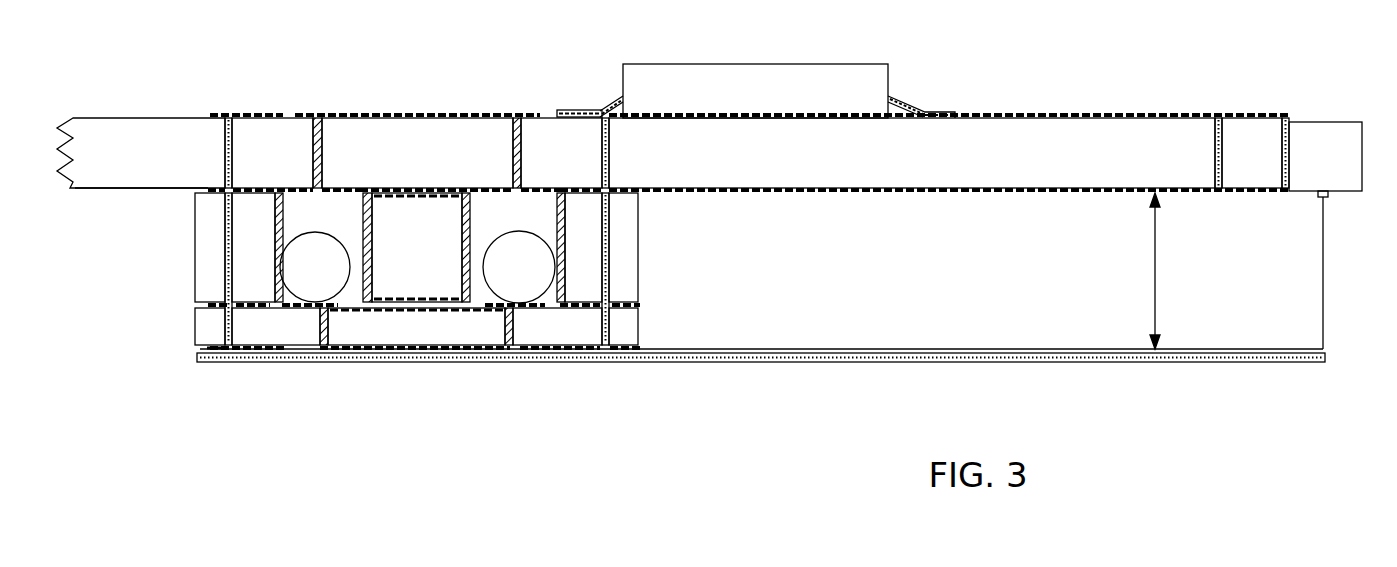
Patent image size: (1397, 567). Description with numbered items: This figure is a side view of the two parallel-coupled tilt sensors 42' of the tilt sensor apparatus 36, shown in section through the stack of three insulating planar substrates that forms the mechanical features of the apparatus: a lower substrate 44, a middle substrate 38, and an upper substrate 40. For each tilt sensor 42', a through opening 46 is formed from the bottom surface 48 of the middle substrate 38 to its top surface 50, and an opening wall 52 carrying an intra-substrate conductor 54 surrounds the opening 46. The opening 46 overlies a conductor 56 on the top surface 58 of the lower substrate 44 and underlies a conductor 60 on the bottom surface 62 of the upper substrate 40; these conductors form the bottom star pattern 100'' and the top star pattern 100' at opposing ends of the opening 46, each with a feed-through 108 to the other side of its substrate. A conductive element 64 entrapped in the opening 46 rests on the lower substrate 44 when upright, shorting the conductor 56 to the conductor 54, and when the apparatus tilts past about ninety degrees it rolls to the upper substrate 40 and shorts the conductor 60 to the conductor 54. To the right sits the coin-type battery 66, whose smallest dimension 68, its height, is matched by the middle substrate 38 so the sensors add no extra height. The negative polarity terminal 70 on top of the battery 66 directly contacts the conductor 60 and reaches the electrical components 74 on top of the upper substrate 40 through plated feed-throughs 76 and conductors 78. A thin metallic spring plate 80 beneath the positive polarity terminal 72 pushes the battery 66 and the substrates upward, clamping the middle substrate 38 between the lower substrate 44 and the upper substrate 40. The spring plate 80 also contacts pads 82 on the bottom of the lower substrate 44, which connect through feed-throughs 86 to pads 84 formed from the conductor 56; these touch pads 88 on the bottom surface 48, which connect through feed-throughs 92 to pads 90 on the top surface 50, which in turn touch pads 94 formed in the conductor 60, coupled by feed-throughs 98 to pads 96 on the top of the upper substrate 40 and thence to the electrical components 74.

The tilt sensor apparatus 36 is at (401, 330).
The middle substrate 38 is at (638, 245).
The upper substrate 40 is at (142, 118).
The tilt sensor 42' is at (398, 366).
The lower substrate 44 is at (197, 345).
The through opening 46 is at (308, 190).
The bottom surface 48 is at (195, 310).
The top surface 50 is at (200, 190).
The opening wall 52 is at (272, 236).
The intra-substrate conductor 54 is at (283, 210).
The conductor 56 is at (595, 308).
The top surface 58 is at (640, 303).
The conductor 60 is at (225, 188).
The bottom surface 62 is at (175, 195).
The conductive element 64 is at (300, 277).
The battery 66 is at (1322, 260).
The smallest dimension 68 is at (1152, 265).
The negative polarity terminal 70 is at (953, 195).
The positive polarity terminal 72 is at (953, 350).
The electrical components 74 is at (632, 64).
The plated feed-throughs 76 is at (1215, 158).
The conductors 78 is at (1062, 118).
The spring plate 80 is at (728, 360).
The pads 82 is at (215, 360).
The pads 84 is at (265, 306).
The feed-throughs 86 is at (232, 328).
The pads 88 is at (218, 302).
The pads 90 is at (215, 198).
The feed-throughs 92 is at (232, 272).
The pads 94 is at (240, 190).
The pads 96 is at (237, 113).
The feed-throughs 98 is at (225, 140).
The top star pattern 100' is at (453, 156).
The bottom star pattern 100'' is at (416, 321).
The feed-through 108 is at (316, 152).